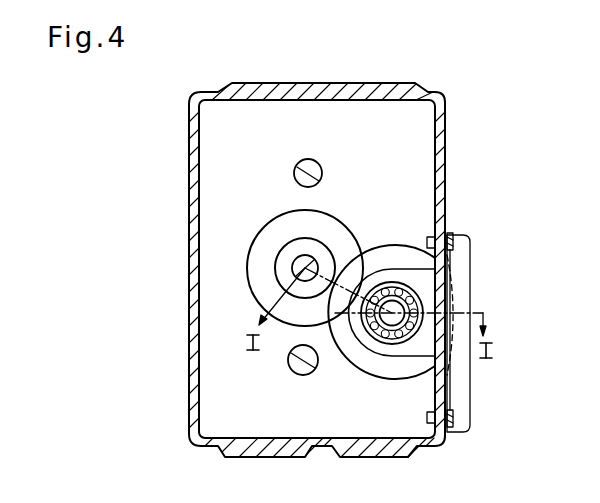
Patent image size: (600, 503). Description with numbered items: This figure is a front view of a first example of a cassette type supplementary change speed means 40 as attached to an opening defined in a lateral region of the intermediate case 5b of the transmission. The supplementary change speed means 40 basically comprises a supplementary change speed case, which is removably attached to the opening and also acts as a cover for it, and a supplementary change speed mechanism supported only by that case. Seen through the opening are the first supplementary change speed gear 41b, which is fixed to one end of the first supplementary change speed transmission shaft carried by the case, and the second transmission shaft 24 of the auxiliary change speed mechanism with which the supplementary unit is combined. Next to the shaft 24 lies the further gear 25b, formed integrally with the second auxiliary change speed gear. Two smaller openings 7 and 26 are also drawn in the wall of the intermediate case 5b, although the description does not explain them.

The intermediate case 5b is at (193, 289).
The mounting hole 7 is at (296, 176).
The second transmission shaft 24 is at (302, 259).
The further gear 25b is at (327, 250).
The mounting hole 26 is at (292, 366).
The supplementary change speed means 40 is at (463, 225).
The first supplementary change speed gear 41b is at (358, 359).